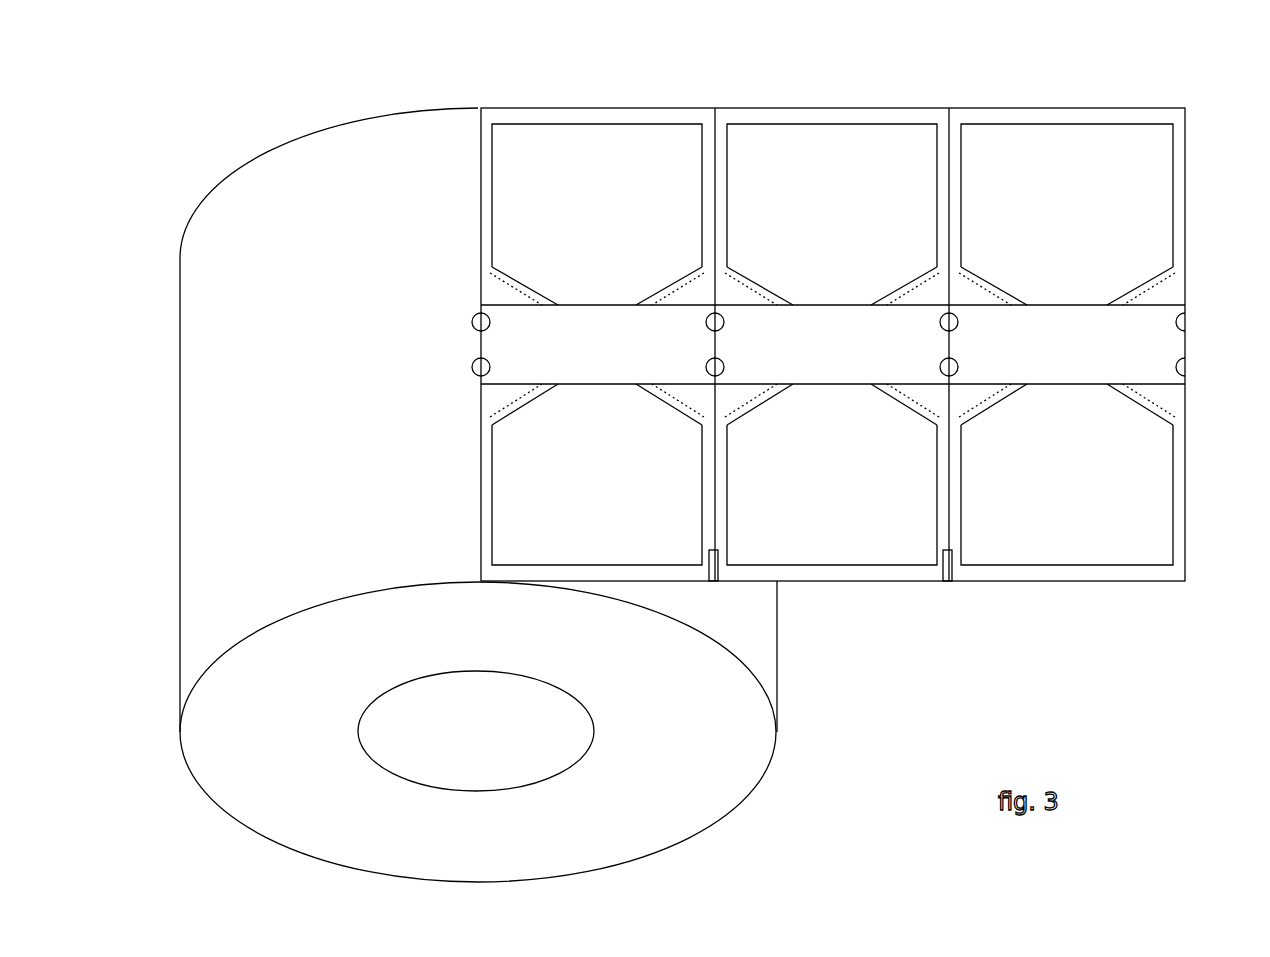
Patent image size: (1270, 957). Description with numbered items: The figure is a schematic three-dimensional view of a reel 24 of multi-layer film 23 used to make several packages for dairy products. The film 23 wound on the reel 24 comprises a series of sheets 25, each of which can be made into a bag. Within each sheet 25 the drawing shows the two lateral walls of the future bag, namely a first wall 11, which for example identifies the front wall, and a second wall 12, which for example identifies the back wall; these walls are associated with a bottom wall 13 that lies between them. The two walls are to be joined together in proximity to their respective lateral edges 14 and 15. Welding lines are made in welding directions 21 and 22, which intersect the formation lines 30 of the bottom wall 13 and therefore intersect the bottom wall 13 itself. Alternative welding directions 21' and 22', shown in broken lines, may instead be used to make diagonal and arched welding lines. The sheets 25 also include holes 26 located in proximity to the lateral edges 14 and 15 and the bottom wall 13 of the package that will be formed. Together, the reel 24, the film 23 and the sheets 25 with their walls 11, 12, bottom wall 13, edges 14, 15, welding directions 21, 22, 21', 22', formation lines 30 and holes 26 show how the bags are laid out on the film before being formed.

The first wall 11 is at (617, 175).
The second wall 12 is at (616, 550).
The bottom wall 13 is at (574, 338).
The lateral edge 14 is at (483, 185).
The lateral edge 15 is at (483, 515).
The welding direction 21 is at (759, 350).
The alternative welding direction 21' is at (750, 345).
The welding direction 22 is at (904, 346).
The alternative welding direction 22' is at (913, 345).
The multi-layer film 23 is at (272, 190).
The reel 24 is at (168, 415).
The sheet 25 is at (571, 97).
The hole 26 is at (488, 362).
The formation line 30 is at (589, 306).